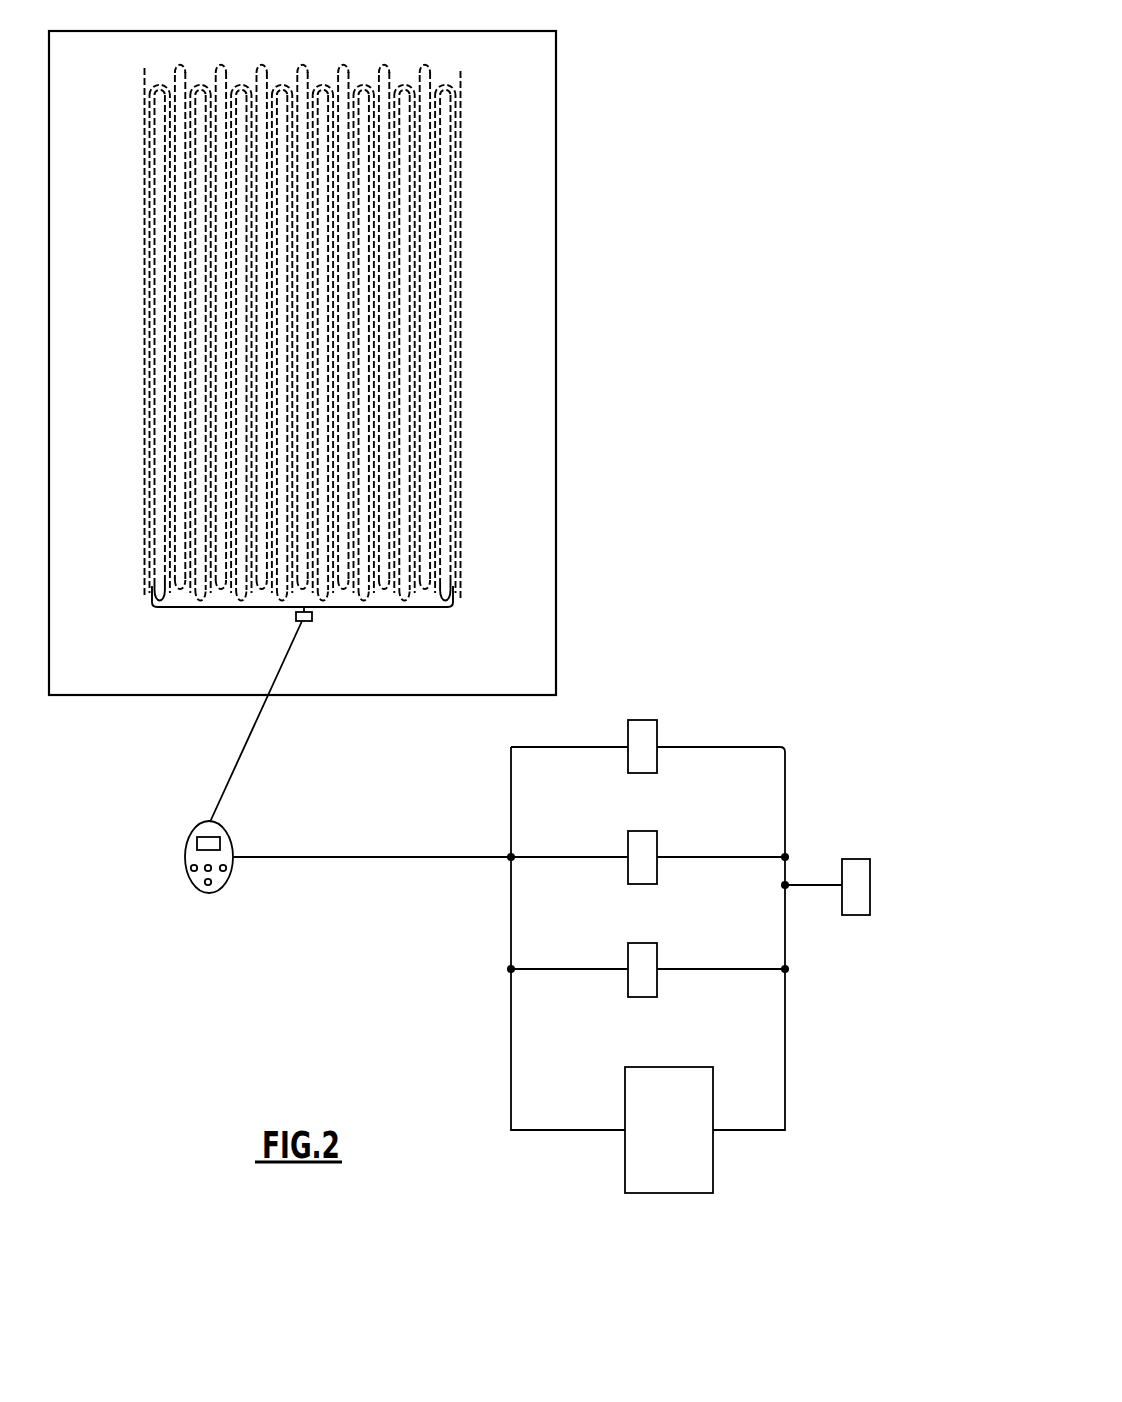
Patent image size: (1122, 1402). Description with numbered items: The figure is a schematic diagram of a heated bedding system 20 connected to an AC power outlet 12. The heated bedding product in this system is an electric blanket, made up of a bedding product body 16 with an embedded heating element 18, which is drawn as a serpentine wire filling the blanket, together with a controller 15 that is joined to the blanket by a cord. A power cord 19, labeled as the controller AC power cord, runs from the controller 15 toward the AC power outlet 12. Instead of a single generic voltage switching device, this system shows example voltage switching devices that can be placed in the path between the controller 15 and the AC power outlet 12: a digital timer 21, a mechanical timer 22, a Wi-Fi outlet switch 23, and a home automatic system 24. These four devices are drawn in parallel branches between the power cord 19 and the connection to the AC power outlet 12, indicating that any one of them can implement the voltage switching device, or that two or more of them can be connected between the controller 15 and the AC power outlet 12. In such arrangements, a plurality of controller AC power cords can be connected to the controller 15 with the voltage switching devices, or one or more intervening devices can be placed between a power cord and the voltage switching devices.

The AC power outlet 12 is at (861, 859).
The controller 15 is at (187, 850).
The bedding product body 16 is at (556, 256).
The heating element 18 is at (460, 201).
The power cord 19 is at (390, 858).
The heated bedding system 20 is at (650, 43).
The digital timer 21 is at (657, 736).
The mechanical timer 22 is at (657, 846).
The Wi-Fi outlet switch 23 is at (657, 958).
The home automatic system 24 is at (713, 1083).